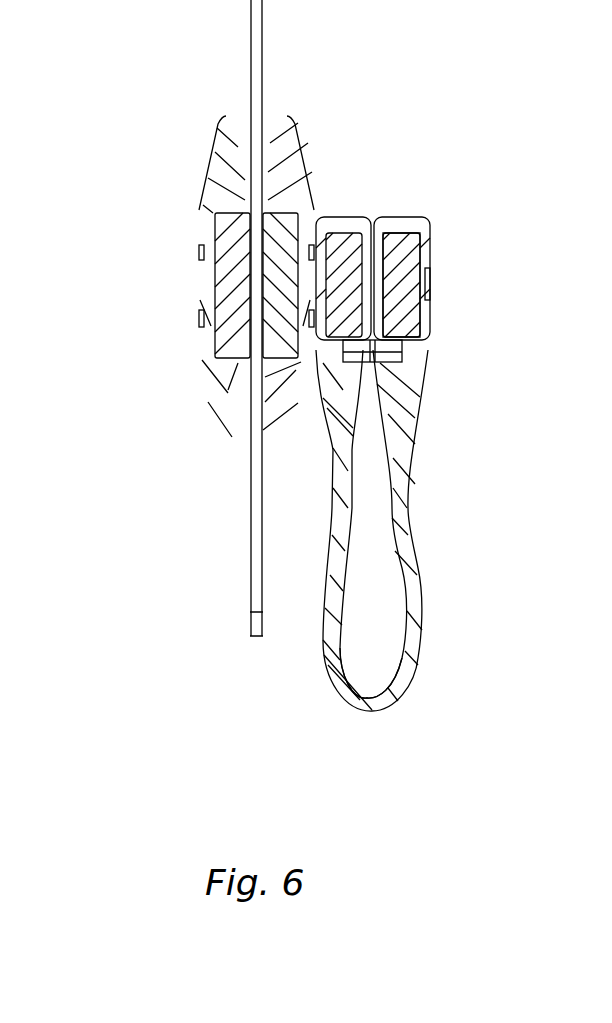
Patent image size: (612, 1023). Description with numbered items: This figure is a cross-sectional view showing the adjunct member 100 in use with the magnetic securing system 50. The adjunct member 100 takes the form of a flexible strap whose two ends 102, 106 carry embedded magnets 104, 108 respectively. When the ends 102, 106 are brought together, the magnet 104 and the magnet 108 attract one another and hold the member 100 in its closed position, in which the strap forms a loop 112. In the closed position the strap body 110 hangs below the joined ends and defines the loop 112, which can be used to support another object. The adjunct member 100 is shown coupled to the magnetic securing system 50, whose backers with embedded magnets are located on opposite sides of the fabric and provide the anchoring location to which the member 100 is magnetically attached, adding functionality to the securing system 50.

The magnetic securing system 50 is at (146, 297).
The adjunct member 100 is at (416, 414).
The end 102 is at (340, 242).
The magnet 104 is at (347, 228).
The end 106 is at (427, 225).
The magnet 108 is at (423, 265).
The loop member 110 is at (416, 576).
The loop 112 is at (378, 661).